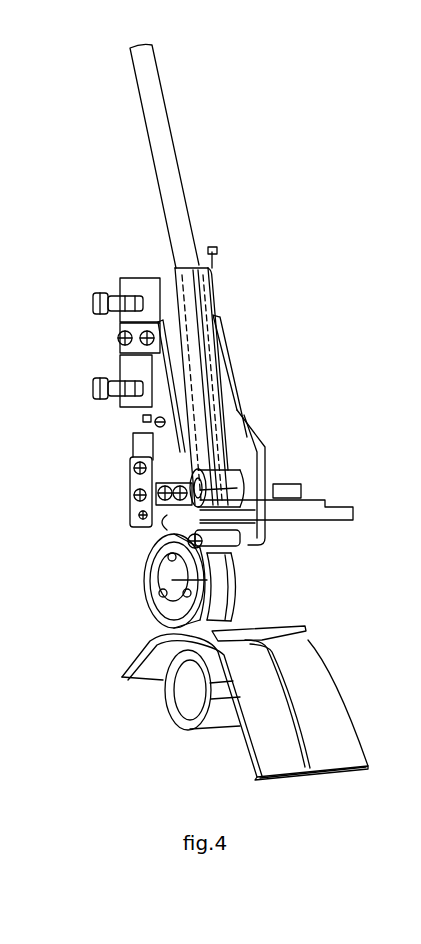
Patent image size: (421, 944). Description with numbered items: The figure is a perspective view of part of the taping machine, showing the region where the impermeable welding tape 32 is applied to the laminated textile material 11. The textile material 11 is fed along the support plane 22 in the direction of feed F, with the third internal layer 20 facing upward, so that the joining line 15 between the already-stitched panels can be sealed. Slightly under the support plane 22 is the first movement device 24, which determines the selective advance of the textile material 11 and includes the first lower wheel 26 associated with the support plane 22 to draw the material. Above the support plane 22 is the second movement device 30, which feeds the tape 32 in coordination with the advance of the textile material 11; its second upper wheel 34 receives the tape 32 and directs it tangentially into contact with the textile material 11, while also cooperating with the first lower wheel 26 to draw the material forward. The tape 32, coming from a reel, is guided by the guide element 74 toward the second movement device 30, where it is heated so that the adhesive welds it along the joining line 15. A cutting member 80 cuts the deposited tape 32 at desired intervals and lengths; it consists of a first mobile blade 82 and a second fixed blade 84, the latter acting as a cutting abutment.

The impermeable welding tape 32 is at (165, 145).
The guide element 74 is at (202, 345).
The second fixed blade 84 is at (252, 498).
The first mobile blade 82 is at (140, 530).
The cutting member 80 is at (142, 540).
The second upper wheel 34 is at (235, 578).
The second movement device 30 is at (118, 612).
The third internal layer 20 is at (315, 652).
The direction of feed F is at (276, 652).
The three-layer laminated textile material 11 is at (355, 710).
The joining line 15 is at (308, 768).
The first movement device 24 is at (127, 697).
The support plane 22 is at (218, 673).
The first lower wheel 26 is at (183, 728).